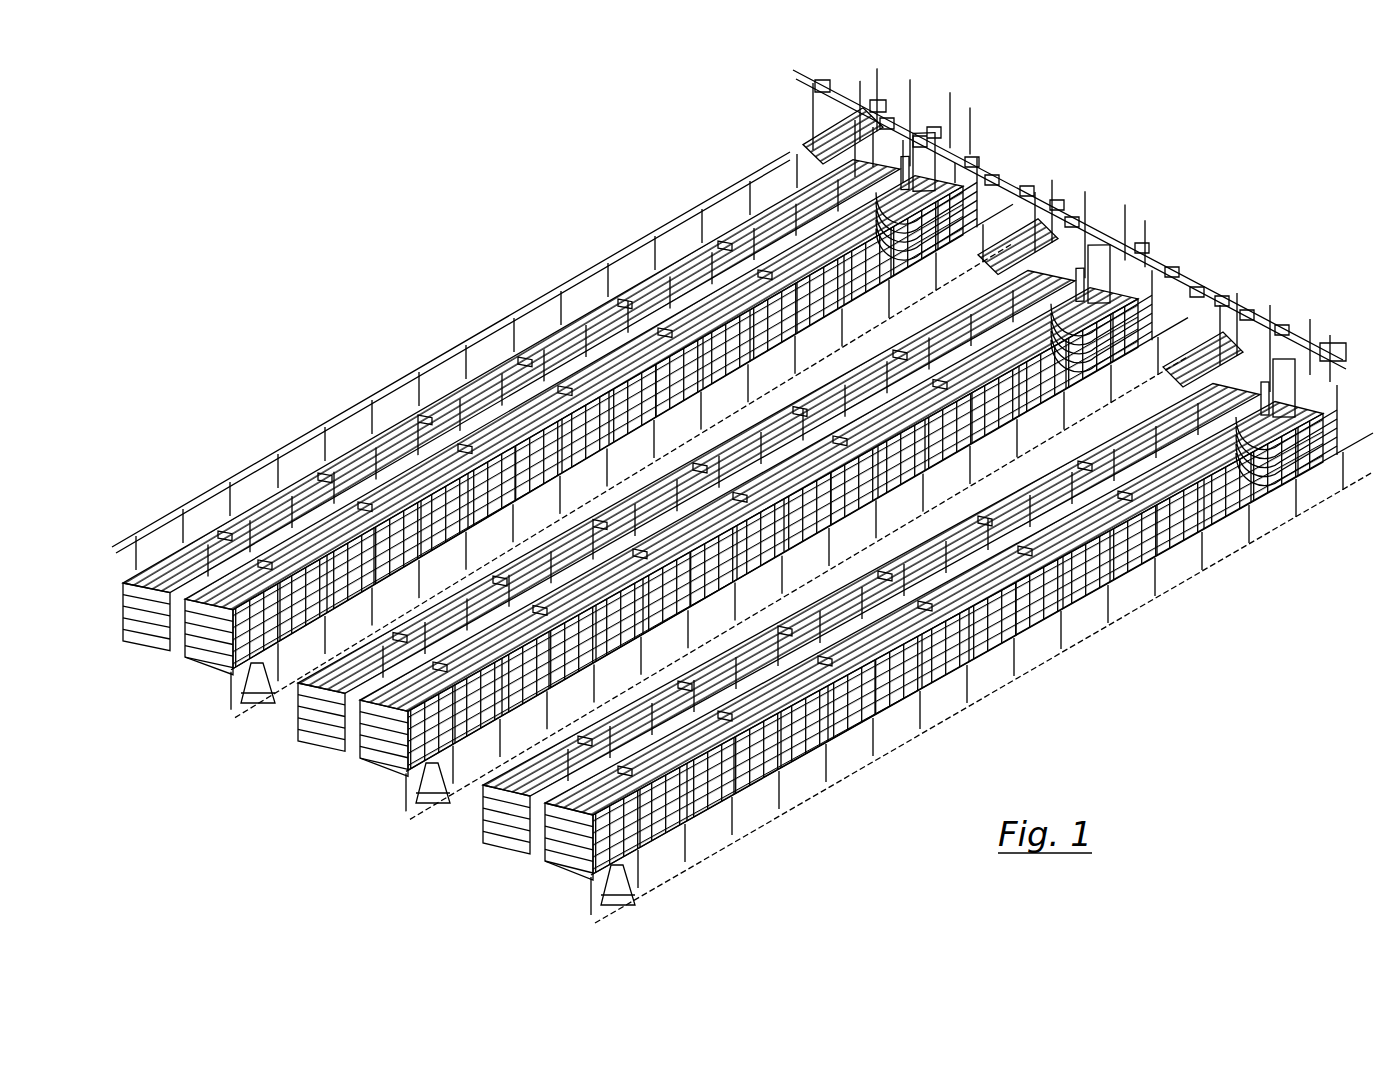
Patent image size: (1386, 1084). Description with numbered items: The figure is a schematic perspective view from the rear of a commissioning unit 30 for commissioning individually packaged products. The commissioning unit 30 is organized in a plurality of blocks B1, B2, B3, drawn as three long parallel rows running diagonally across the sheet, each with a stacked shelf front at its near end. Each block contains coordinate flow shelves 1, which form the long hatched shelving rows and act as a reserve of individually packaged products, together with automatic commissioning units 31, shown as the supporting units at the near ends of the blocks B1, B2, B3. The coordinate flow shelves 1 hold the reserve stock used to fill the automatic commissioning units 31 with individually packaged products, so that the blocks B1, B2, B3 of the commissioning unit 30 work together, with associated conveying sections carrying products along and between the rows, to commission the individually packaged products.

The commissioning unit 30 is at (332, 270).
The coordinate flow shelves 1 is at (605, 303).
The block B1 is at (928, 608).
The block B2 is at (743, 499).
The block B3 is at (568, 392).
The automatic commissioning unit 31 is at (258, 704).